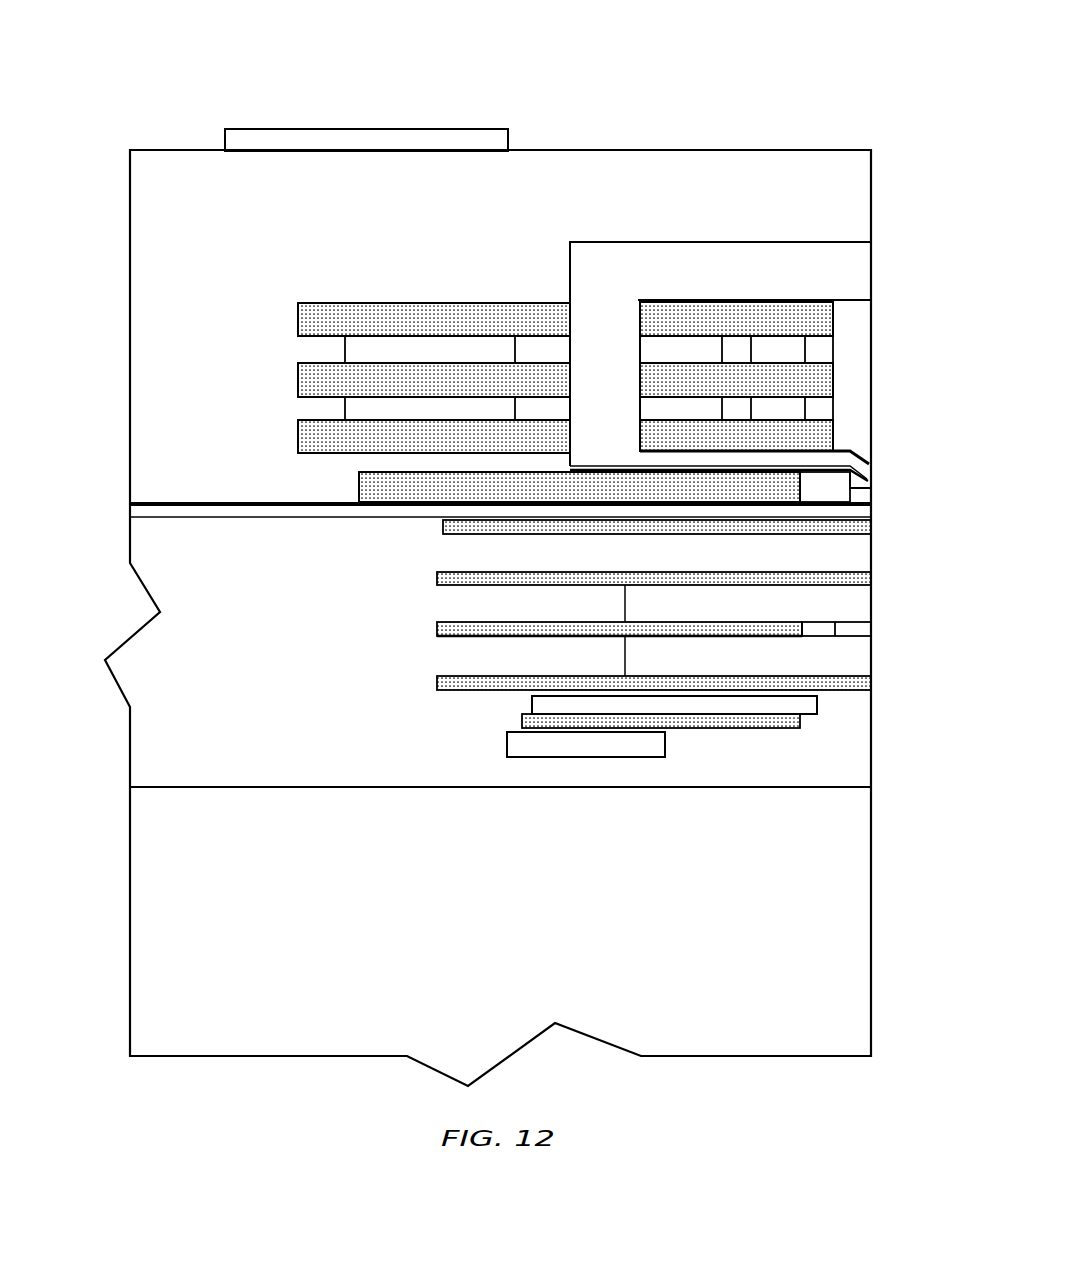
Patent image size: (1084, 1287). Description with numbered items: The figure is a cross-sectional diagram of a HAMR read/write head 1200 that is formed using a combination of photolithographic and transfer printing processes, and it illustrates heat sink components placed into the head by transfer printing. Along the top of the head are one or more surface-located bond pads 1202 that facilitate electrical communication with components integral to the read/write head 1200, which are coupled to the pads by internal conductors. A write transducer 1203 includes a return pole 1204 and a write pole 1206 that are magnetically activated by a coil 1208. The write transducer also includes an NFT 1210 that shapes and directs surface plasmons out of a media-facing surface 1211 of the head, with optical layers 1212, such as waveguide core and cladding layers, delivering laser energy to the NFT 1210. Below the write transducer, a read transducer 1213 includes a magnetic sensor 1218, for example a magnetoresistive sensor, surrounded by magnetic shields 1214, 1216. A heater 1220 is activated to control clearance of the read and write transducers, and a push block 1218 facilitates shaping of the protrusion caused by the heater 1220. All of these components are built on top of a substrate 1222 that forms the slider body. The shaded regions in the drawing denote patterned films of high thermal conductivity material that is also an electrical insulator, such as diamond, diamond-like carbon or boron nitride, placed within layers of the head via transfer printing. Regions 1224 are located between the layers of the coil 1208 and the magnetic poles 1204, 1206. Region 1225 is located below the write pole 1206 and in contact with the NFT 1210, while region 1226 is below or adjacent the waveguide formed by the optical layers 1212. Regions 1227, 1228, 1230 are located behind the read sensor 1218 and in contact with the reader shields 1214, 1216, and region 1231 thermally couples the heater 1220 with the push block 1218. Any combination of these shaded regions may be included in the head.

The read/write head 1200 is at (632, 88).
The bond pads 1202 is at (312, 128).
The write transducer 1203 is at (250, 253).
The return pole 1204 is at (871, 283).
The write pole 1206 is at (867, 472).
The coil 1208 is at (427, 410).
The NFT 1210 is at (868, 498).
The media-facing surface 1211 is at (871, 172).
The optical layers 1212 is at (865, 510).
The read transducer 1213 is at (344, 570).
The magnetic shield 1214 is at (863, 600).
The magnetic shield 1216 is at (868, 662).
The magnetic sensor / push block 1218 is at (867, 628).
The heater 1220 is at (665, 744).
The substrate 1222 is at (145, 893).
The heat sink regions 1224 is at (322, 440).
The heat sink region 1225 is at (359, 487).
The heat sink region 1226 is at (443, 527).
The heat sink region 1227 is at (437, 578).
The heat sink region 1228 is at (437, 628).
The heat sink region 1230 is at (437, 683).
The heat sink region 1231 is at (522, 721).